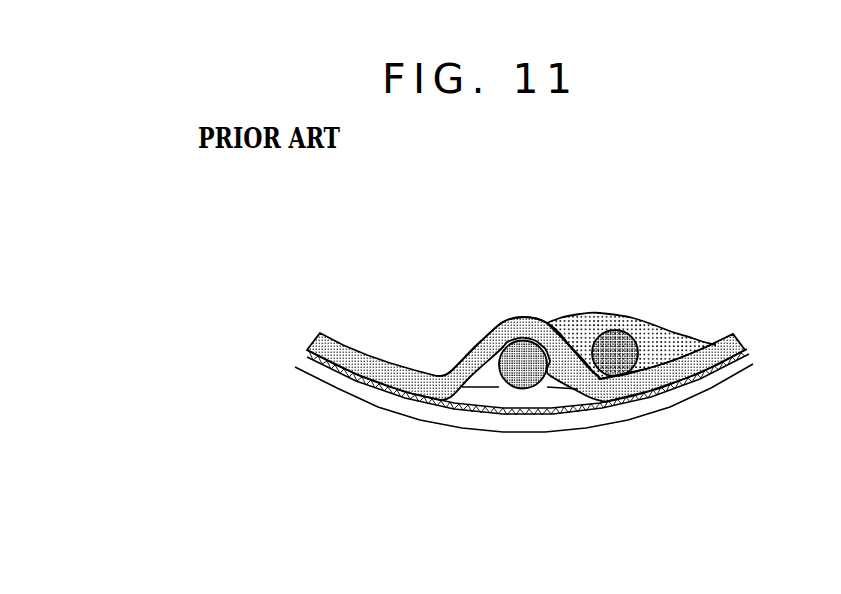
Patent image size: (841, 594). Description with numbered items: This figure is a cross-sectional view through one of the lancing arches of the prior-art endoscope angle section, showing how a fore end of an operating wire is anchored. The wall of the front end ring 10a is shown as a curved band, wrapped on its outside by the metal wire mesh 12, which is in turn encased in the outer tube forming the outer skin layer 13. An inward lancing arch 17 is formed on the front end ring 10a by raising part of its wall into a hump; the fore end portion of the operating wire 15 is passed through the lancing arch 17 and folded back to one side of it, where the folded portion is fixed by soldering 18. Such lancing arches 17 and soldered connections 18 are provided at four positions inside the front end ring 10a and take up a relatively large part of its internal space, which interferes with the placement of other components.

The front end ring 10a is at (385, 372).
The metal wire mesh 12 is at (468, 412).
The outer skin layer 13 is at (337, 384).
The operating wire 15 is at (523, 372).
The lancing arch 17 is at (522, 325).
The soldering 18 is at (660, 343).